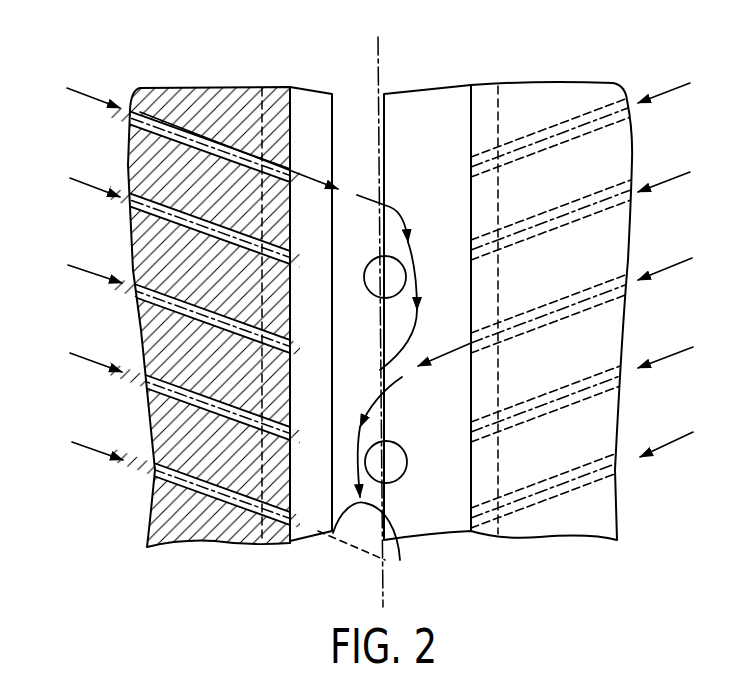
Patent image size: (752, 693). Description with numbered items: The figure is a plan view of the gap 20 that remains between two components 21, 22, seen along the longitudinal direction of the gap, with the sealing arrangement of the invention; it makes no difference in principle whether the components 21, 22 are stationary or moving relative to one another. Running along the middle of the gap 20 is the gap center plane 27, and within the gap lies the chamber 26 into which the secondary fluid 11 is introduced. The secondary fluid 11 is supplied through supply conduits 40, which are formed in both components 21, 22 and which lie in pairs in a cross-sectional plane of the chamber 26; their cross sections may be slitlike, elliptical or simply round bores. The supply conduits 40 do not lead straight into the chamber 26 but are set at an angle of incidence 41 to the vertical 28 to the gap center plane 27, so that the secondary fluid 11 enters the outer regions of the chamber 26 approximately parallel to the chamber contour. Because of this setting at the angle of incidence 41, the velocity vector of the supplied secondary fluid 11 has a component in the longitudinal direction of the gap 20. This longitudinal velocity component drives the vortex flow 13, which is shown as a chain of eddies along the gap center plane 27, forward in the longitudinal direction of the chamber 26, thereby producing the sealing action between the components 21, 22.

The secondary fluid 11 is at (75, 88).
The vortex flow 13 is at (387, 207).
The gap 20 is at (349, 175).
The chamber 26 is at (358, 110).
The component 21 is at (182, 533).
The component 22 is at (585, 525).
The gap center plane 27 is at (426, 472).
The vertical 28 is at (383, 580).
The supply conduits 40 is at (168, 208).
The angle of incidence 41 is at (357, 543).